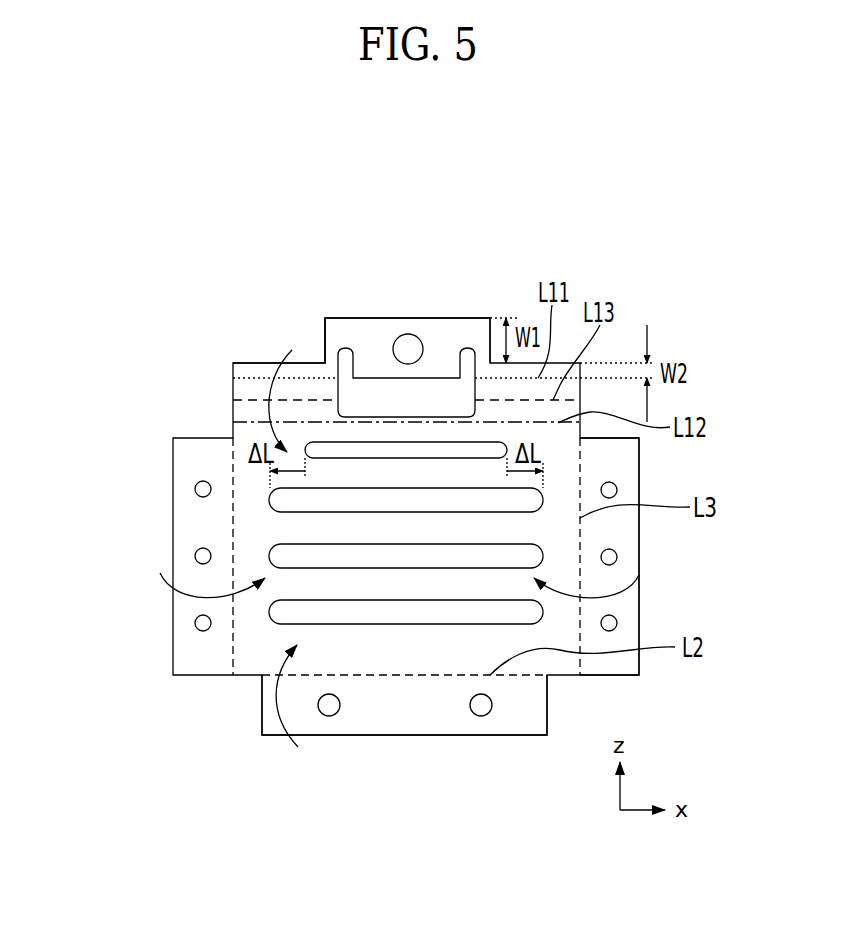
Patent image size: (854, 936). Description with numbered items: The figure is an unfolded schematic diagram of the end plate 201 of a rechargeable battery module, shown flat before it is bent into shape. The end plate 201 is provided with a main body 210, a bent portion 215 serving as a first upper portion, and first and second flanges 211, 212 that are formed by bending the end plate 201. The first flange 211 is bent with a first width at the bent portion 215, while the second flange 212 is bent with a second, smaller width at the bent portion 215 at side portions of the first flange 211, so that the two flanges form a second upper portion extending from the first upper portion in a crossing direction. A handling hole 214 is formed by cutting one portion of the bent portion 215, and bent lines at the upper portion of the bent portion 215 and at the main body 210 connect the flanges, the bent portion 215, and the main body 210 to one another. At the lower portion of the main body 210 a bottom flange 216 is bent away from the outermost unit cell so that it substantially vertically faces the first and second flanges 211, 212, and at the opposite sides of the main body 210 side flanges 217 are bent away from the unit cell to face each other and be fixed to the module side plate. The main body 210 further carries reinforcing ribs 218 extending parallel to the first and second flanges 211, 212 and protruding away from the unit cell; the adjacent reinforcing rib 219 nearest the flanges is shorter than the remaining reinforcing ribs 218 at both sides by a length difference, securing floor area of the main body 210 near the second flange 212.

The end plate 201 is at (397, 532).
The main body 210 is at (257, 647).
The first flange 211 is at (368, 317).
The second flange 212 is at (253, 360).
The handling hole 214 is at (343, 398).
The bent portion 215 is at (248, 410).
The bottom flange 216 is at (428, 715).
The side flange 217 is at (617, 535).
The reinforcing rib 218 is at (295, 556).
The adjacent reinforcing rib 219 is at (483, 447).